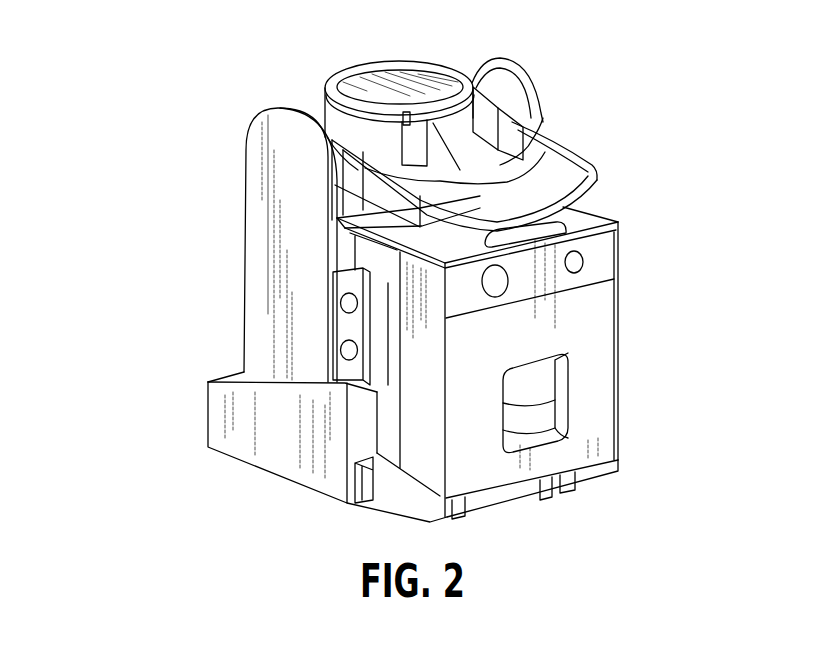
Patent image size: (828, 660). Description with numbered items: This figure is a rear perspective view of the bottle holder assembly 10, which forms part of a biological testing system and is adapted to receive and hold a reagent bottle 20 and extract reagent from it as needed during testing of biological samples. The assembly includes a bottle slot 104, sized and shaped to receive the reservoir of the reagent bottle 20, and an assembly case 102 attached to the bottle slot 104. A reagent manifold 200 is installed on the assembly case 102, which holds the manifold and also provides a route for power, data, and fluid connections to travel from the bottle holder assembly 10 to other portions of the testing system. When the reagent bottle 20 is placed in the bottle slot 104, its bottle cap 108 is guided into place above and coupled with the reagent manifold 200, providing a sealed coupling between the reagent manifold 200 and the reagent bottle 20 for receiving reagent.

The bottle holder assembly 10 is at (168, 116).
The reagent bottle 20 is at (451, 54).
The assembly case 102 is at (607, 414).
The bottle slot 104 is at (213, 418).
The bottle cap 108 is at (387, 92).
The reagent manifold 200 is at (608, 257).